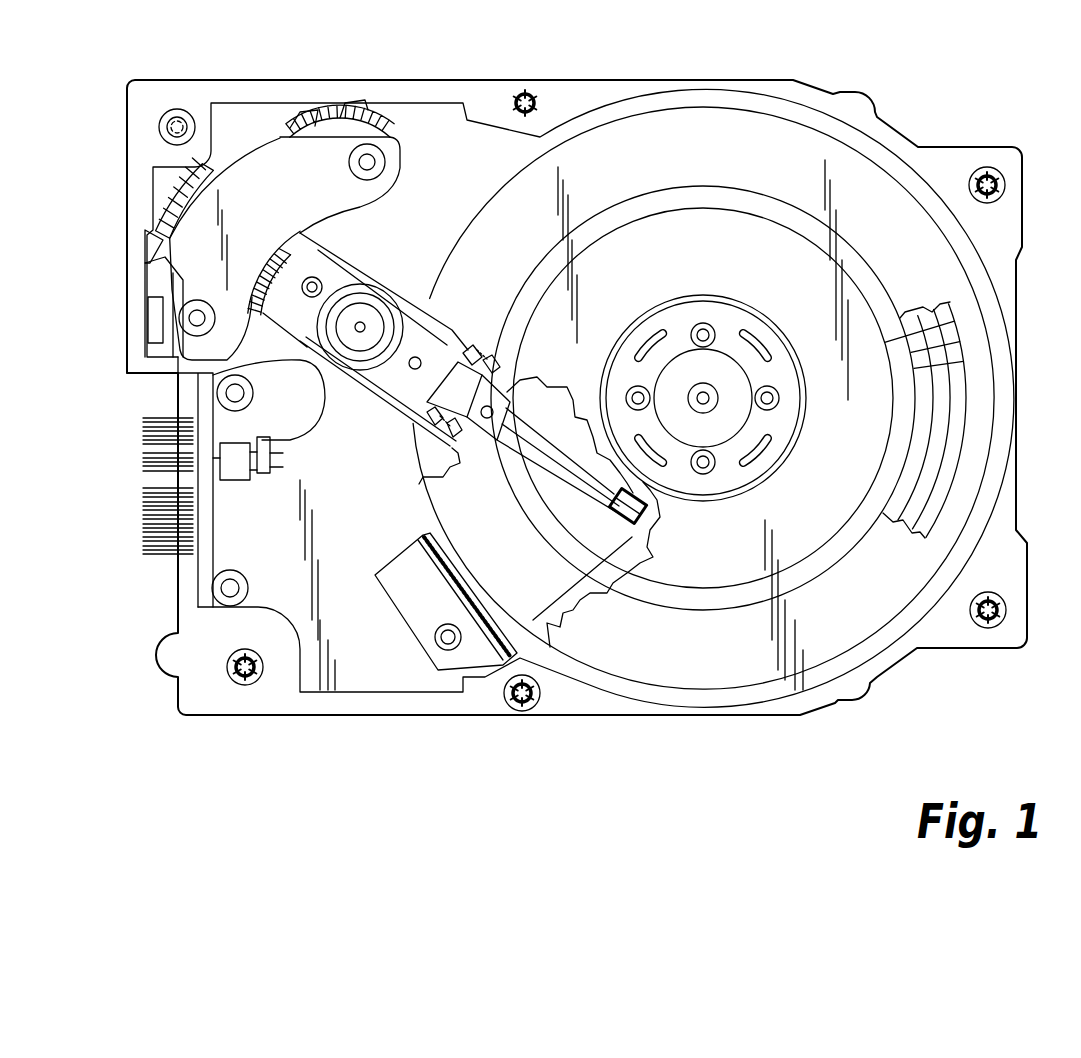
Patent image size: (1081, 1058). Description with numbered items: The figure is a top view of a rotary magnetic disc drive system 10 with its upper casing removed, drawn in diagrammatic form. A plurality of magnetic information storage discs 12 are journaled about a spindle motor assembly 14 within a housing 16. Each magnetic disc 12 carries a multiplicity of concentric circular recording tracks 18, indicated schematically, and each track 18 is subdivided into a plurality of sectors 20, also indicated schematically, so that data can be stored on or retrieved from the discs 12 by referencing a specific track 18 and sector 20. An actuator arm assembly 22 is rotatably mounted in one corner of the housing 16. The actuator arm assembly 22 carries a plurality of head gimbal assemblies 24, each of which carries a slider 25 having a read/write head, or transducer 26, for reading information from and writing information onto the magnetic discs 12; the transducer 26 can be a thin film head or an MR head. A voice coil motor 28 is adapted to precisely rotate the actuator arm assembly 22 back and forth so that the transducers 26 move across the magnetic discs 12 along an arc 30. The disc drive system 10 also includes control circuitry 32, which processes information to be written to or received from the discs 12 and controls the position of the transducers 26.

The rotary magnetic disc drive system 10 is at (777, 727).
The magnetic information storage disc 12 is at (843, 617).
The spindle motor assembly 14 is at (722, 345).
The housing 16 is at (548, 722).
The concentric circular recording track 18 is at (960, 457).
The sector 20 is at (967, 343).
The actuator arm assembly 22 is at (400, 290).
The head gimbal assembly 24 is at (613, 520).
The slider 25 is at (655, 563).
The transducer 26 is at (667, 523).
The voice coil motor 28 is at (262, 185).
The arc 30 is at (565, 595).
The control circuitry 32 is at (150, 263).